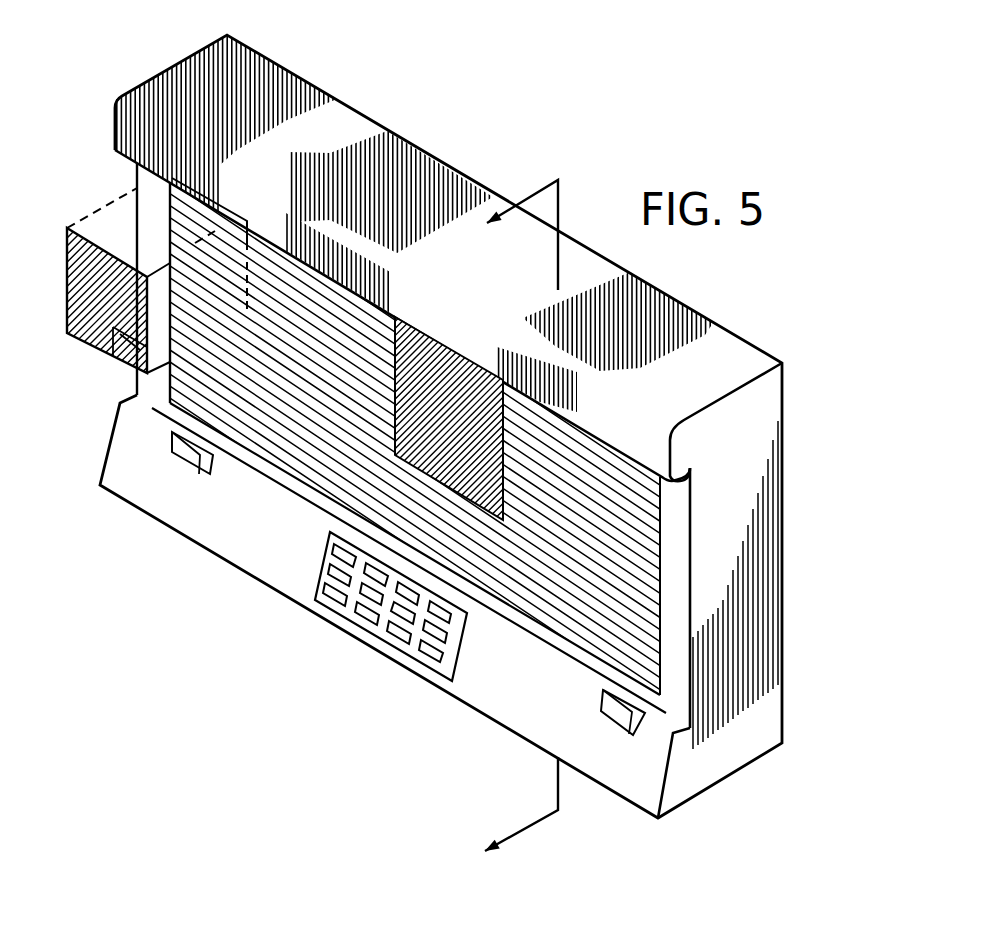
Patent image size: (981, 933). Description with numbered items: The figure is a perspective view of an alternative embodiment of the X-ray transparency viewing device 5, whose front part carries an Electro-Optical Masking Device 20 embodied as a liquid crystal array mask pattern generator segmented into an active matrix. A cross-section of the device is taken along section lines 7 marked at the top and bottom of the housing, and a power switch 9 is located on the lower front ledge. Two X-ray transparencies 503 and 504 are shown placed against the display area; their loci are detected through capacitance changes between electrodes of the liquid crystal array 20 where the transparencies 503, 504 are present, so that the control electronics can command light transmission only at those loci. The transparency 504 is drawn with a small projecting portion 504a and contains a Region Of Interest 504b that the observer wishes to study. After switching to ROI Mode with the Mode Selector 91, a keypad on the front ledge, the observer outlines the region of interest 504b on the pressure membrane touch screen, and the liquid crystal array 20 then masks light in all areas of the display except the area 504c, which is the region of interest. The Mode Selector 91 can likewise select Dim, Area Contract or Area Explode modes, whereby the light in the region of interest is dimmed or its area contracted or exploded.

The viewing device 5 is at (422, 443).
The section lines 7- 7 is at (521, 513).
The power switch 9 is at (183, 452).
The Electro-Optical Masking Device 20 is at (650, 632).
The Mode Selector 91 is at (400, 641).
The transparency 503 is at (460, 375).
The transparency 504 is at (146, 282).
The plug insertion slot 504a is at (178, 203).
The Region Of Interest 504b is at (133, 361).
The unmasked ROI area 504c is at (250, 295).